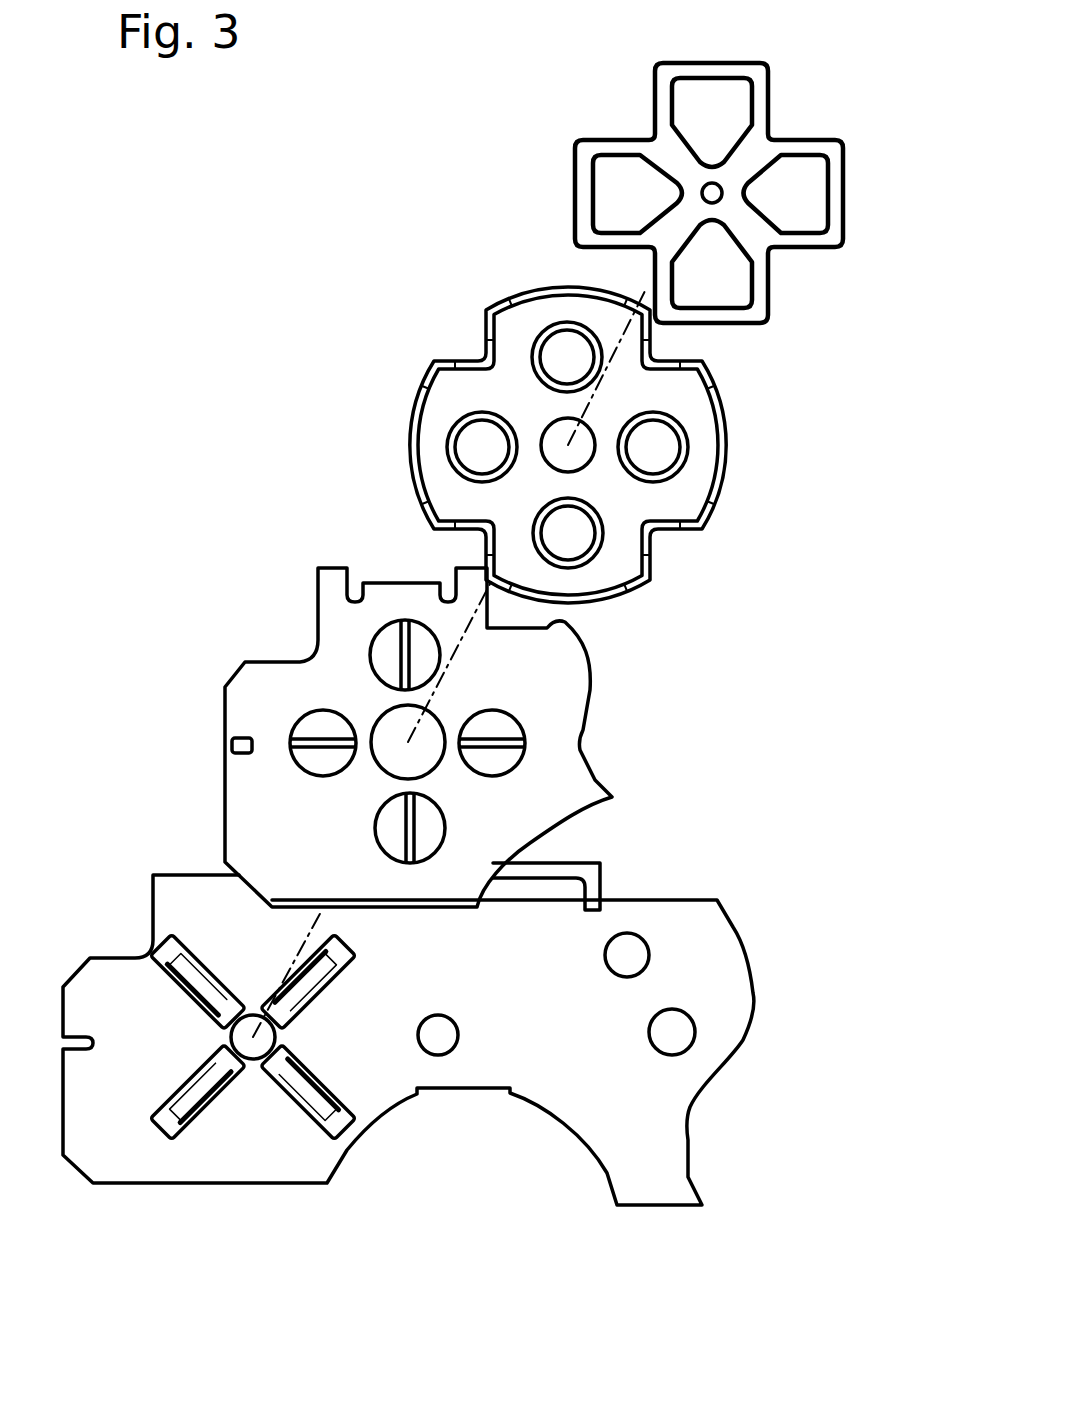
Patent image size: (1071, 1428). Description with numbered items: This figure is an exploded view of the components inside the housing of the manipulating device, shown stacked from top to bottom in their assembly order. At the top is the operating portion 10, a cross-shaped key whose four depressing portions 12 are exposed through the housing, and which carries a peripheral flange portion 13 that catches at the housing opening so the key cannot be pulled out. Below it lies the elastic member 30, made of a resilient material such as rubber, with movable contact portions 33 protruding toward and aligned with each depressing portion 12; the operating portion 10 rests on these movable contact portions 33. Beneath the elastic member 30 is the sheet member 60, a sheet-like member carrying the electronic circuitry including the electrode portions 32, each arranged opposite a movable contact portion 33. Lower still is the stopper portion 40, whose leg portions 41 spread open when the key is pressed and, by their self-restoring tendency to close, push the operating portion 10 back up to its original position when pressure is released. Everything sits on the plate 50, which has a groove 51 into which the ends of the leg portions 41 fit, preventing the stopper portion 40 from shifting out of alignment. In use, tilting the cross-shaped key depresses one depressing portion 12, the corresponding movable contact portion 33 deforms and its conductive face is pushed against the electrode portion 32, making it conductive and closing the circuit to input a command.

The operating portion 10 is at (687, 167).
The depressing portion 12 is at (793, 202).
The flange portion 13 is at (760, 102).
The elastic member 30 is at (588, 409).
The electrode portion 32 is at (510, 757).
The movable contact portion 33 is at (557, 365).
The stopper portion 40 is at (251, 1125).
The leg portions 41 is at (213, 1080).
The plate 50 is at (153, 893).
The groove 51 is at (177, 1127).
The sheet member 60 is at (440, 703).